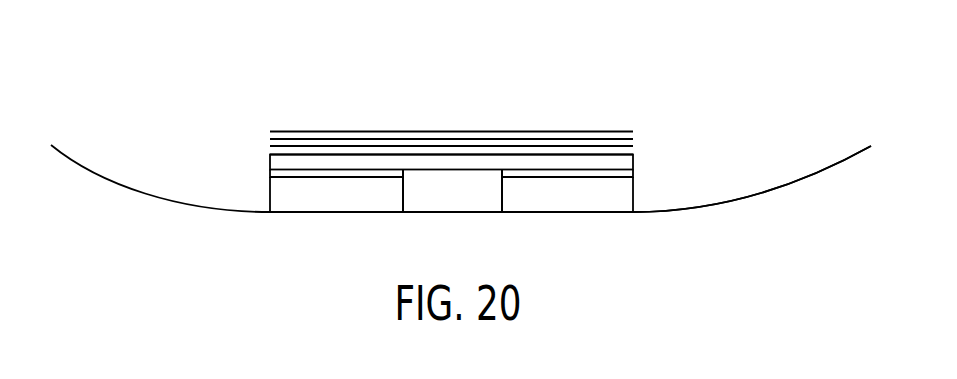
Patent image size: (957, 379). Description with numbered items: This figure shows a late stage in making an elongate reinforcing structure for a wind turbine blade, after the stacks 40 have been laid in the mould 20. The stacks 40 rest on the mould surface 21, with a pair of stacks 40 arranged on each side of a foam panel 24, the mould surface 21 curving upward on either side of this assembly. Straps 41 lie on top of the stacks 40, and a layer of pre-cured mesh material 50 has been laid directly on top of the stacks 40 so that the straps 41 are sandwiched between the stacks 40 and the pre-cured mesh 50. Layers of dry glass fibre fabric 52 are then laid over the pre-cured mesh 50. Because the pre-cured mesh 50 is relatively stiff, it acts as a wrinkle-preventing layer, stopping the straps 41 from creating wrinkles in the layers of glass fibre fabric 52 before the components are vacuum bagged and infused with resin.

The mould 20 is at (806, 157).
The mould surface 21 is at (700, 205).
The foam panel 24 is at (462, 198).
The stack 40 is at (325, 200).
The strap 41 is at (327, 175).
The pre-cured mesh material 50 is at (558, 162).
The dry glass fibre fabric 52 is at (408, 153).